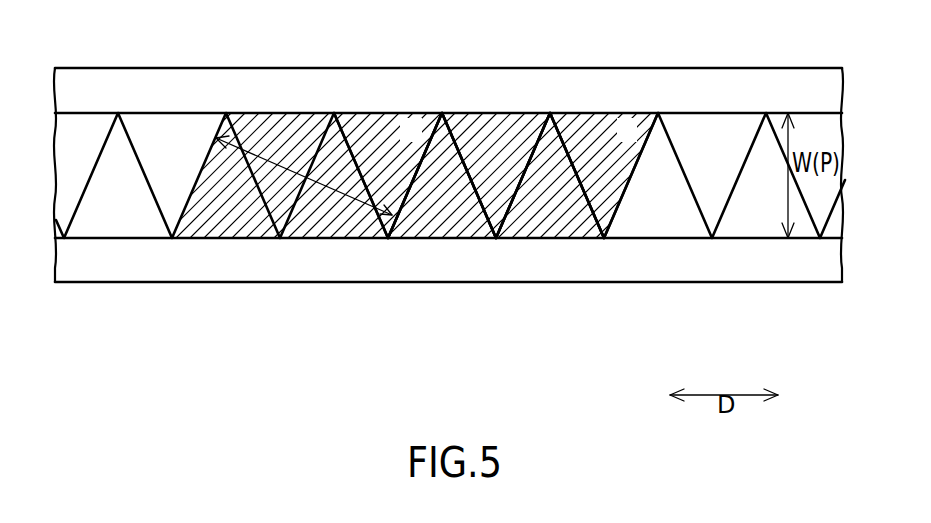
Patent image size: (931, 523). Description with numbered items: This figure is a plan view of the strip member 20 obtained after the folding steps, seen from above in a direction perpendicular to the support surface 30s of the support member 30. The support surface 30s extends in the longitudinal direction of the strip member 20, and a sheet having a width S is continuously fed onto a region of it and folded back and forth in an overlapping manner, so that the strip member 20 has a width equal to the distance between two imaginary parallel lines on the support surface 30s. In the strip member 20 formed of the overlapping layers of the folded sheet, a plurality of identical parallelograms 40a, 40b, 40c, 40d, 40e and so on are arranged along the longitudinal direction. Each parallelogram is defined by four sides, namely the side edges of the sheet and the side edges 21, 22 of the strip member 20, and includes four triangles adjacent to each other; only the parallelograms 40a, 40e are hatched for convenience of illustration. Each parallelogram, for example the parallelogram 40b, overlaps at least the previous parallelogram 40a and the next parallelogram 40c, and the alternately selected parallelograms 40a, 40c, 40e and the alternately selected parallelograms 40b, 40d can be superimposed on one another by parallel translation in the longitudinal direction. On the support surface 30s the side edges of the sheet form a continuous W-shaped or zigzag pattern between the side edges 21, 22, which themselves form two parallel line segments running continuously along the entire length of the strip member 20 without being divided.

The strip member 20 is at (653, 207).
The side edge of the strip member 21 is at (755, 238).
The side edge of the strip member 22 is at (712, 112).
The support member 30 is at (115, 287).
The support surface 30s is at (244, 257).
The parallelogram 40a is at (600, 143).
The parallelogram 40b is at (547, 202).
The parallelogram 40c is at (493, 145).
The parallelogram 40d is at (442, 207).
The parallelogram 40e is at (384, 143).
The width of the sheet S is at (275, 162).